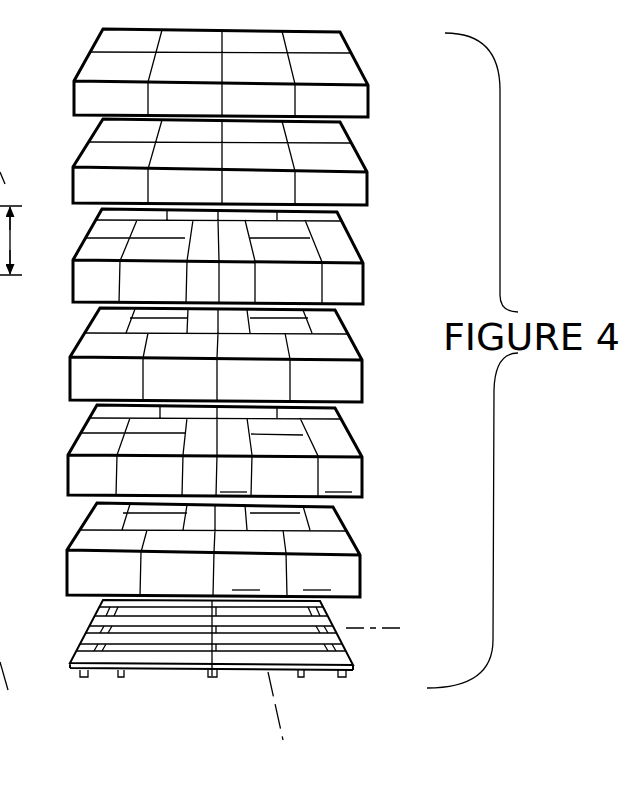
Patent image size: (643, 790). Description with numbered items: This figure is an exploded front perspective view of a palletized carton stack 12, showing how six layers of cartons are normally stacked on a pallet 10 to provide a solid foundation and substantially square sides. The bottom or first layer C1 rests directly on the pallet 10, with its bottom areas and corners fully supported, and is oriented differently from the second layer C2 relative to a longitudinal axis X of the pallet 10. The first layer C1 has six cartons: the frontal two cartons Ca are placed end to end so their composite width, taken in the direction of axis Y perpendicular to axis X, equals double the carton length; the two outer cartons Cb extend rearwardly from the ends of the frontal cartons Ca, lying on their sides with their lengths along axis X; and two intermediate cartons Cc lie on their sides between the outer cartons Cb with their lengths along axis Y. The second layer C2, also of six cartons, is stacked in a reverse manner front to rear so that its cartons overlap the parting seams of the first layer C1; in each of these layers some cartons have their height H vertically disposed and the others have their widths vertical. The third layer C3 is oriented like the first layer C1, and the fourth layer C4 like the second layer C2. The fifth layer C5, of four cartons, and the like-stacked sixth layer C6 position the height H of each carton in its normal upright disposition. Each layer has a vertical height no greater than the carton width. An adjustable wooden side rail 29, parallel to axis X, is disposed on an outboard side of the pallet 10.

The sixth layer C6 is at (373, 58).
The fifth layer C5 is at (373, 152).
The fourth layer C4 is at (370, 243).
The third layer C3 is at (368, 355).
The second layer C2 is at (368, 460).
The first layer C1 is at (365, 558).
The frontal cartons Ca is at (325, 416).
The outer cartons Cb is at (320, 522).
The intermediate cartons Cc is at (293, 449).
The pallet 10 is at (241, 666).
The adjustable wooden side rail 29 is at (87, 633).
The palletized carton stack 12 is at (15, 695).
The longitudinal axis X is at (273, 707).
The axis Y is at (400, 628).
The height H is at (11, 240).